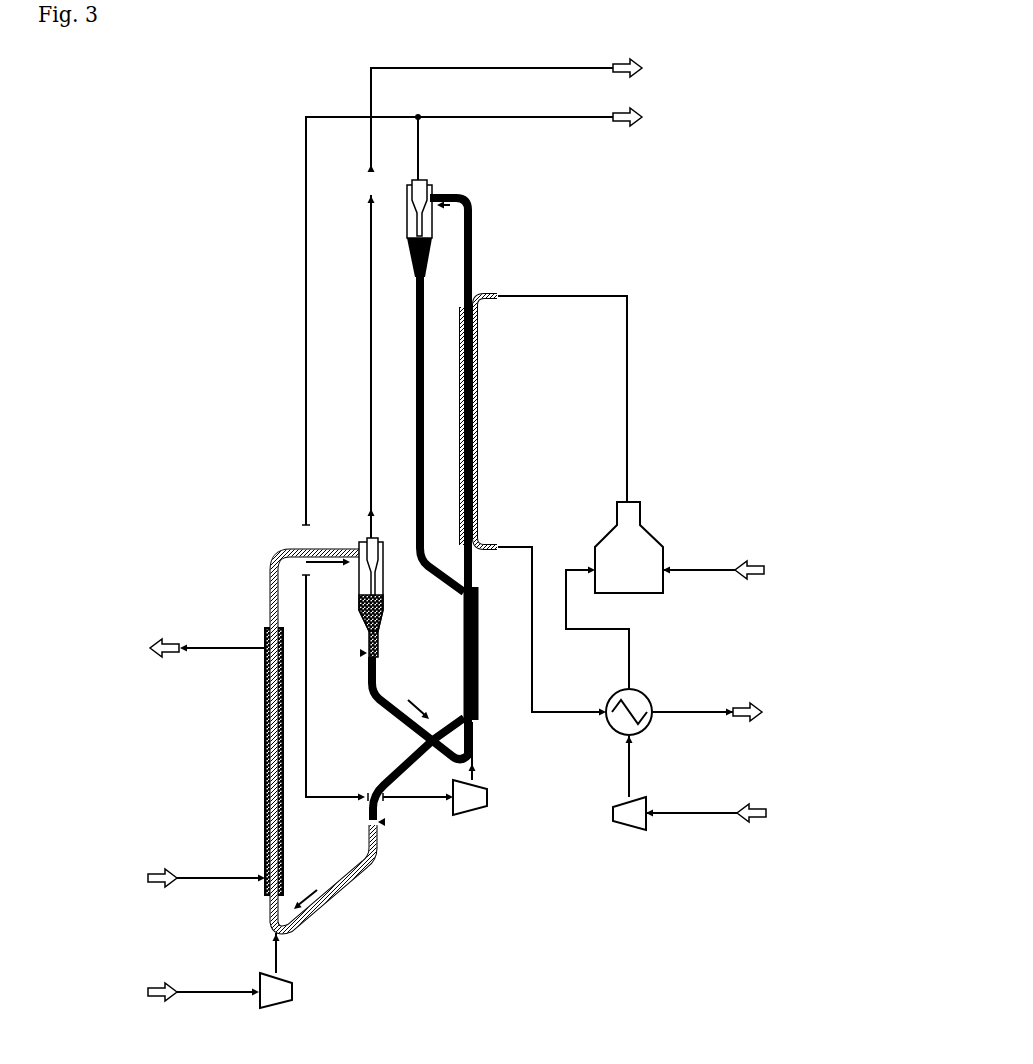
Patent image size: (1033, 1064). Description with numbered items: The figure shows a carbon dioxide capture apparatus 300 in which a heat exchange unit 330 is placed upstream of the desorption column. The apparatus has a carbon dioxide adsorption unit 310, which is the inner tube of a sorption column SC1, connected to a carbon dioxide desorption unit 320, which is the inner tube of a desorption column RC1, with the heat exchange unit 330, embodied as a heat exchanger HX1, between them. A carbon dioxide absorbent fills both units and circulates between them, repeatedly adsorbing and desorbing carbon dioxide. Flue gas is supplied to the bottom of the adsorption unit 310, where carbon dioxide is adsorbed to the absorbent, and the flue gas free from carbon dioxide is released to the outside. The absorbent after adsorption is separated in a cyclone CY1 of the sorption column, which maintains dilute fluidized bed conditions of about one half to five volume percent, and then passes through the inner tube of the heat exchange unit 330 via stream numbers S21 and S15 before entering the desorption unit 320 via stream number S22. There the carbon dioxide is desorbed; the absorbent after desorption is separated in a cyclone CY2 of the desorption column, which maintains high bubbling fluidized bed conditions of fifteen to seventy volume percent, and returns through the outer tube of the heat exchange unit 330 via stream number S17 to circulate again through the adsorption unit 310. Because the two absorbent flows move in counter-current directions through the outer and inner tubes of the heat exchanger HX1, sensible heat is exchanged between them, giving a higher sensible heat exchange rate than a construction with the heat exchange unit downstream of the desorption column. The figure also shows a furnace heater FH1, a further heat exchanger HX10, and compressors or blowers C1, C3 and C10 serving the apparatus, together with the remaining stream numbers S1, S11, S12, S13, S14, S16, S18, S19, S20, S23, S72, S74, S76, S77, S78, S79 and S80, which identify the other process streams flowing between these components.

The carbon dioxide capture apparatus 300 is at (268, 114).
The carbon dioxide adsorption unit 310 is at (236, 761).
The carbon dioxide desorption unit 320 is at (509, 421).
The heat exchange unit 330 is at (509, 662).
The carbon dioxide sorption column SC1 is at (256, 701).
The cyclone CY1 is at (389, 597).
The cyclone CY2 is at (565, 168).
The carbon dioxide desorption column RC1 is at (524, 440).
The heat exchanger HX1 is at (517, 726).
The furnace heater FH1 is at (629, 562).
The heat exchanger HX10 is at (647, 720).
The compressor or blower C1 is at (275, 1003).
The compressor or blower C3 is at (470, 780).
The compressor or blower C10 is at (630, 825).
The stream number S1 is at (169, 986).
The stream number S11 is at (254, 953).
The stream number S12 is at (157, 866).
The stream number S13 is at (169, 639).
The stream number S14 is at (377, 688).
The stream number S15 is at (420, 707).
The stream number S16 is at (454, 377).
The stream number S17 is at (416, 433).
The stream number S18 is at (378, 815).
The stream number S19 is at (442, 148).
The stream number S20 is at (529, 304).
The stream number S21 is at (323, 724).
The stream number S22 is at (502, 568).
The stream number S23 is at (349, 366).
The stream number S72 is at (726, 800).
The stream number S74 is at (607, 766).
The stream number S76 is at (569, 638).
The stream number S77 is at (742, 701).
The stream number S78 is at (597, 628).
The stream number S79 is at (735, 558).
The stream number S80 is at (562, 382).